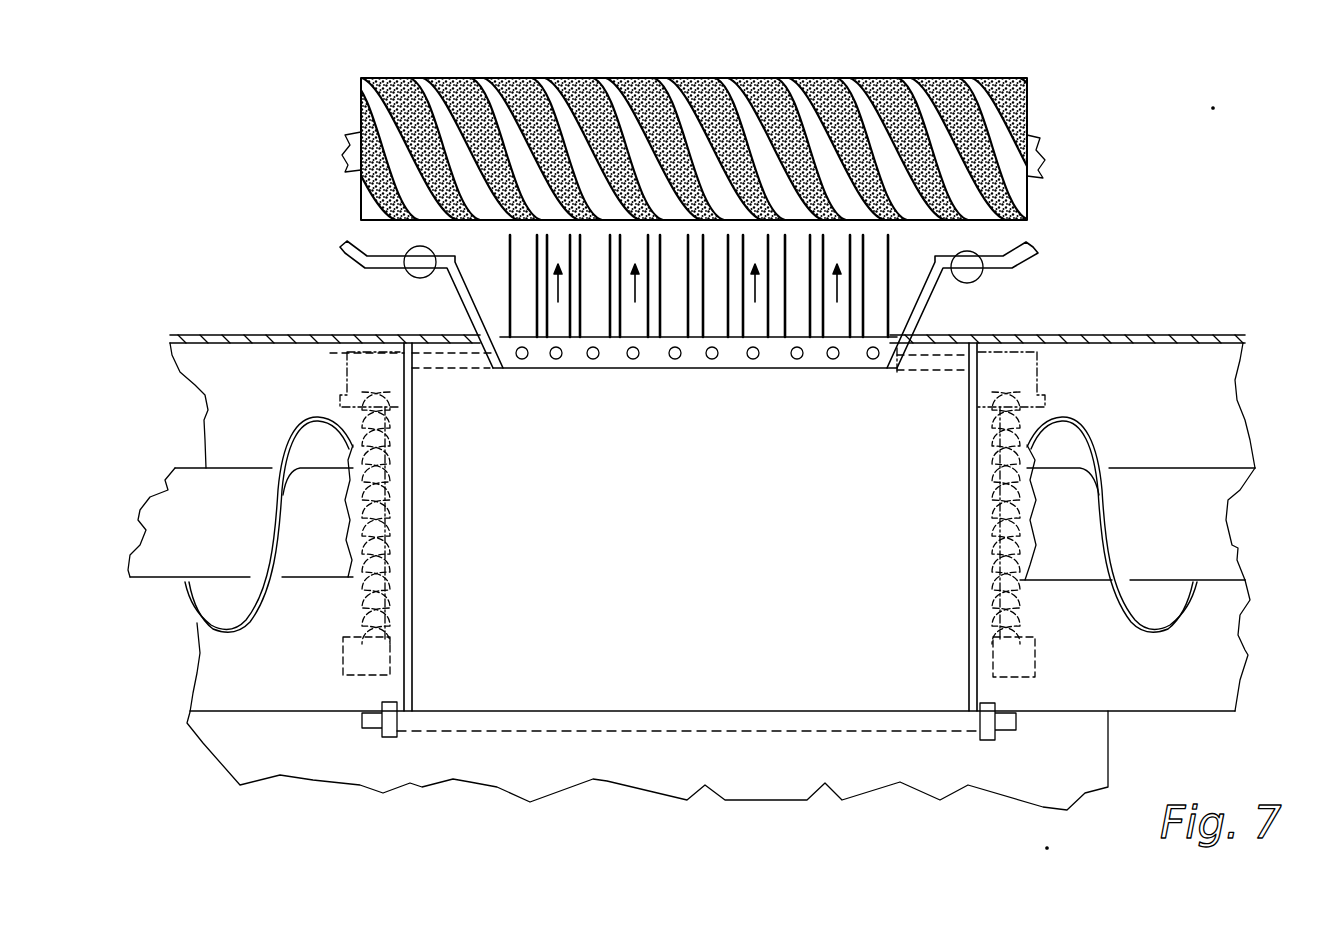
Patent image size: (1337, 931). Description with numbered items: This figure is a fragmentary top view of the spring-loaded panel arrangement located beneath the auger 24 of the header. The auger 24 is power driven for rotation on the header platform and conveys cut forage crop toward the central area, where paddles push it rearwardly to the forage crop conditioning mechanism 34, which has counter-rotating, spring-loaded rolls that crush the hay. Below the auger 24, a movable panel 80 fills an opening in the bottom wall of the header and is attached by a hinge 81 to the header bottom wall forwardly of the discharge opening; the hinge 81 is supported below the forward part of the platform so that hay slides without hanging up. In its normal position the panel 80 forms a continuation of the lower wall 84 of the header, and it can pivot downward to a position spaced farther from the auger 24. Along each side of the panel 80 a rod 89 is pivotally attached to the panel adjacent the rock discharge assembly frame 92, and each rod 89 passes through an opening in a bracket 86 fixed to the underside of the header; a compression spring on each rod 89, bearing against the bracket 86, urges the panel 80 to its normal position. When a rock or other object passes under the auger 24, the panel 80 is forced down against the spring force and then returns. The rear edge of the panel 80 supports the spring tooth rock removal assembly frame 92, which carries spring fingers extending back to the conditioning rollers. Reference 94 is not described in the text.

The forage crop conditioning mechanism 34 is at (700, 78).
The spring tooth rock removal assembly frame 92 is at (685, 358).
The seal 94 is at (345, 362).
The lower wall of the header 84 is at (282, 630).
The auger 24 is at (1185, 545).
The rod 89 is at (413, 590).
The bracket 86 is at (340, 655).
The panel 80 is at (582, 690).
The hinge 81 is at (395, 735).